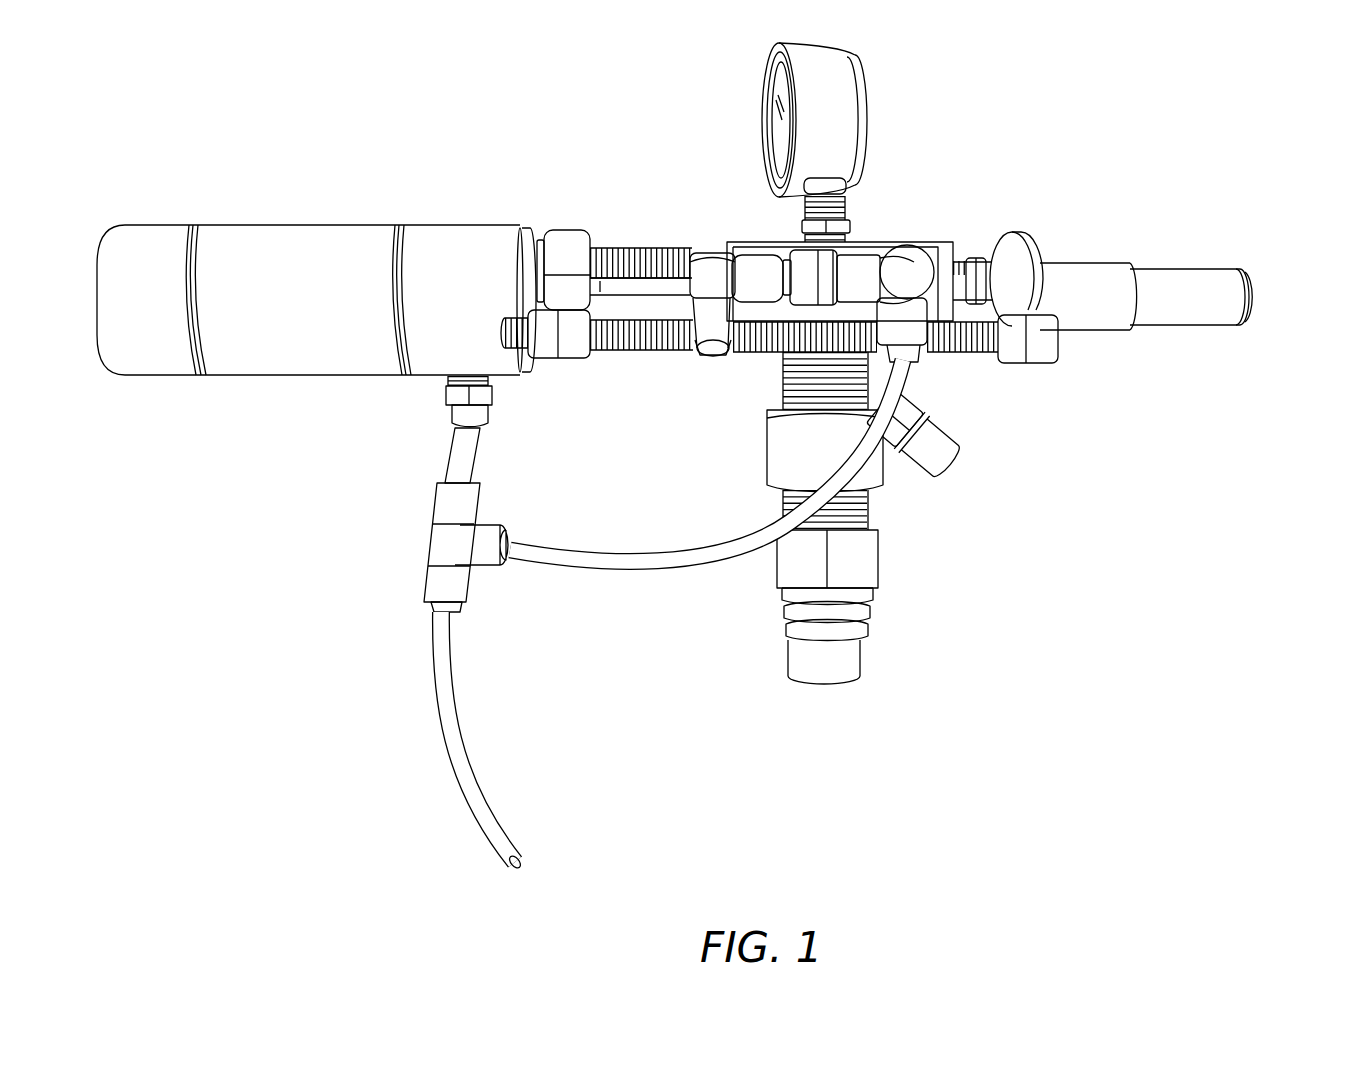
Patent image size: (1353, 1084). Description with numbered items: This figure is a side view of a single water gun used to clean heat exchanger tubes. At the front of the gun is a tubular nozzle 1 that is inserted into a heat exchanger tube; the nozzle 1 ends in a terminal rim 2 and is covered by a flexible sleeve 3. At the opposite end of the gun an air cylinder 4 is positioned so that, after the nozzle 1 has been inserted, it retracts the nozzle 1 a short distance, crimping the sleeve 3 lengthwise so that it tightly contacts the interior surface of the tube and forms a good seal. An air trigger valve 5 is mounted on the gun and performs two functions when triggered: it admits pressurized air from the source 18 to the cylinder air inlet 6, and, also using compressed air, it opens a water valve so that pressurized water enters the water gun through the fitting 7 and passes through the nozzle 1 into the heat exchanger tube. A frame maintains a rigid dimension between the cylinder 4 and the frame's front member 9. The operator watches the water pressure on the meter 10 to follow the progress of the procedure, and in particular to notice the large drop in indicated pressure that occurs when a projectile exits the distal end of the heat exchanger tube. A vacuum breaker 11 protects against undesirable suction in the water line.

The nozzle 1 is at (703, 456).
The terminal rim 2 is at (1260, 305).
The flexible sleeve 3 is at (1193, 330).
The air cylinder 4 is at (303, 224).
The air trigger valve 5 is at (905, 252).
The cylinder air inlet 6 is at (448, 402).
The fitting 7 is at (866, 662).
The front member 9 is at (1012, 233).
The meter 10 is at (866, 94).
The vacuum breaker 11 is at (955, 412).
The source 18 is at (708, 366).